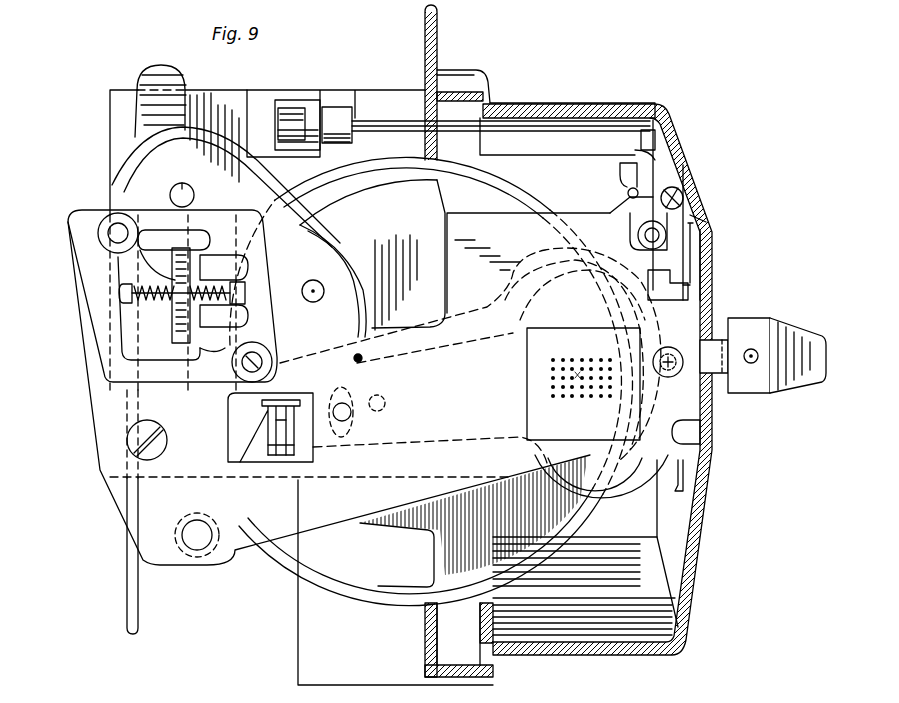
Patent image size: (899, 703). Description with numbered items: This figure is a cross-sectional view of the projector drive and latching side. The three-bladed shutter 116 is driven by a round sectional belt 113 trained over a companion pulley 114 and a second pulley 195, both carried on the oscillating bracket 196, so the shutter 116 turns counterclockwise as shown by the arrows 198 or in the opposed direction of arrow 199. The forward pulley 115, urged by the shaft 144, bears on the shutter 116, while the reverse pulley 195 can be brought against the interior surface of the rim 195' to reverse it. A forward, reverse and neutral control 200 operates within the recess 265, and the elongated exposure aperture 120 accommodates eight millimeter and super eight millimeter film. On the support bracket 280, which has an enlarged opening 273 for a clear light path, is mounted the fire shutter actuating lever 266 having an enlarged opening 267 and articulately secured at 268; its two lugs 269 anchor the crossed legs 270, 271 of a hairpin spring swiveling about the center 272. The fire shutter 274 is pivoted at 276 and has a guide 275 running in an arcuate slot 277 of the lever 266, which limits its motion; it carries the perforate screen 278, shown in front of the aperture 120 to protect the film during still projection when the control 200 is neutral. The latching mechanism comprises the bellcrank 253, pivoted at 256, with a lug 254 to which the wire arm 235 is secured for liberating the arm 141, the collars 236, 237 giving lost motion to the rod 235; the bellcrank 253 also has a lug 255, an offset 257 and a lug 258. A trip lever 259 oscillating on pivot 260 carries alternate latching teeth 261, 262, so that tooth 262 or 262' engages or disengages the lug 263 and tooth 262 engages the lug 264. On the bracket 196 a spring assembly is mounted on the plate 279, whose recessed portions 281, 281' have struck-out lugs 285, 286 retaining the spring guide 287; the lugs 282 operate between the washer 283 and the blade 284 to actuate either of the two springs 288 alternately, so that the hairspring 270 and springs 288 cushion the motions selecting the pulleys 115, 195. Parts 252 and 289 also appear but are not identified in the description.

The round sectional belt 113 is at (109, 512).
The companion pulley 114 is at (153, 153).
The pulley 115 is at (215, 133).
The three-bladed shutter 116 is at (515, 190).
The exposure or projection aperture 120 is at (566, 441).
The extending arm 141 is at (266, 90).
The shaft 144 is at (190, 168).
The second pulley 195 is at (372, 258).
The rim 195' is at (368, 180).
The oscillating bracket 196 is at (75, 320).
The arrows 198 is at (300, 167).
The arrow 199 is at (340, 220).
The forward, reverse, and neutral control 200 is at (795, 386).
The wire arm 235 is at (376, 122).
The collar 236 is at (337, 108).
The collar 237 is at (296, 110).
The housing cover 252 is at (657, 114).
The bellcrank 253 is at (660, 162).
The lug 254 is at (652, 136).
The lug 255 is at (625, 186).
The pivot 256 is at (684, 205).
The offset 257 is at (716, 239).
The lug 258 is at (692, 291).
The trip lever 259 is at (637, 235).
The pivot 260 is at (684, 352).
The latching tooth 261 is at (630, 194).
The latching tooth 262 is at (723, 485).
The tooth 262' is at (732, 194).
The lug 263 is at (612, 290).
The lug 264 is at (697, 412).
The recess 265 is at (702, 292).
The fire shutter actuating lever 266 is at (613, 496).
The enlarged opening 267 is at (620, 461).
The pivot 268 is at (101, 478).
The lugs 269 is at (242, 462).
The hairpin spring leg 270 is at (227, 431).
The hairpin spring leg 271 is at (258, 462).
The center 272 is at (203, 562).
The enlarged opening 273 is at (525, 364).
The fire shutter 274 is at (462, 343).
The guide 275 is at (357, 406).
The pivot 276 is at (386, 409).
The arcuate slot 277 is at (364, 373).
The perforate screen 278 is at (538, 404).
The plate 279 is at (80, 216).
The bracket 280 is at (462, 213).
The recessed portion 281 is at (131, 219).
The recessed portion 281' is at (282, 276).
The lugs 282 is at (178, 346).
The washer 283 is at (173, 308).
The blade 284 is at (200, 232).
The lug 285 is at (247, 300).
The lug 286 is at (120, 294).
The spring guide 287 is at (247, 293).
The springs 288 is at (143, 318).
The bushing 289 is at (240, 365).